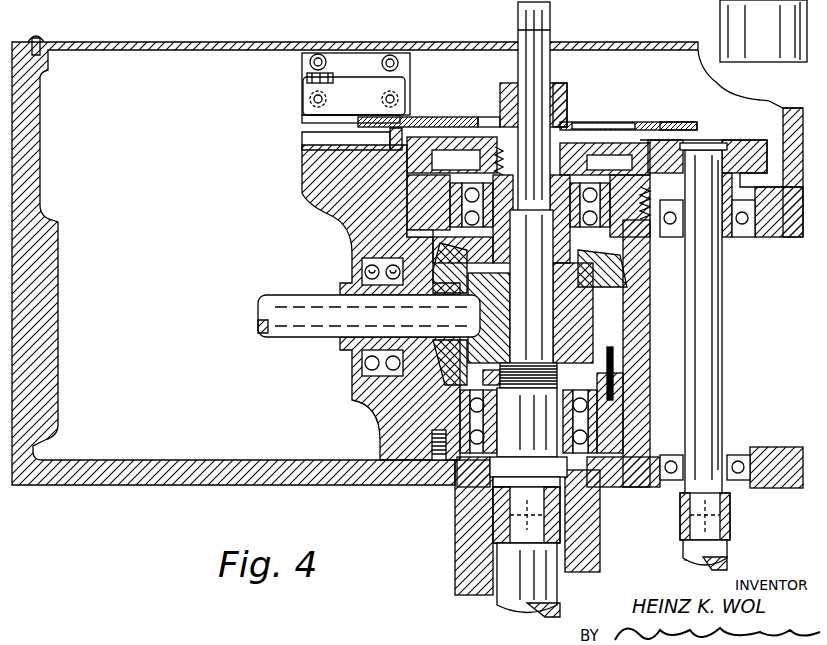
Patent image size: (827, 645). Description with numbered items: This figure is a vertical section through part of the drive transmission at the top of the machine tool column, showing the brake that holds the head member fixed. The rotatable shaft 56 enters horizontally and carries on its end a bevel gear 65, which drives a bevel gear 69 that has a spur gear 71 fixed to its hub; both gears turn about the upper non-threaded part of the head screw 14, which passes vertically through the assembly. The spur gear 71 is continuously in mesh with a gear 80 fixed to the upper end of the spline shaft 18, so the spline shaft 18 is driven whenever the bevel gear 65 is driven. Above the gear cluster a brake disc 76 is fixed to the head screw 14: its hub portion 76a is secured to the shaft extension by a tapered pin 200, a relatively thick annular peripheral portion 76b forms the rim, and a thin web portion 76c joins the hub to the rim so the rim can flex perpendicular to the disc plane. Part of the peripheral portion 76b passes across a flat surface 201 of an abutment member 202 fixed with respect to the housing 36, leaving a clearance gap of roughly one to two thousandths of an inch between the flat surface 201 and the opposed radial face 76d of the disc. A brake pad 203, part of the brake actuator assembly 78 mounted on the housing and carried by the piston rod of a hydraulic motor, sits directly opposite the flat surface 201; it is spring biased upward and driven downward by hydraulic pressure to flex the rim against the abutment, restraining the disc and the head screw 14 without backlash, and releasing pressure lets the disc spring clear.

The head screw 14 is at (497, 598).
The spline shaft 18 is at (728, 557).
The housing 36 is at (300, 460).
The rotatable shaft 56 is at (290, 296).
The bevel gear 65 is at (408, 364).
The bevel gear 69 is at (401, 262).
The spur gear 71 is at (638, 205).
The brake disc 76 is at (620, 121).
The hub portion 76a is at (565, 93).
The peripheral portion 76b is at (680, 121).
The web portion 76c is at (470, 127).
The radial face 76d is at (397, 130).
The brake actuator assembly 78 is at (292, 101).
The gear 80 is at (740, 142).
The tapered pin 200 is at (506, 101).
The flat surface 201 is at (302, 121).
The abutment member 202 is at (302, 166).
The brake pad 203 is at (412, 118).